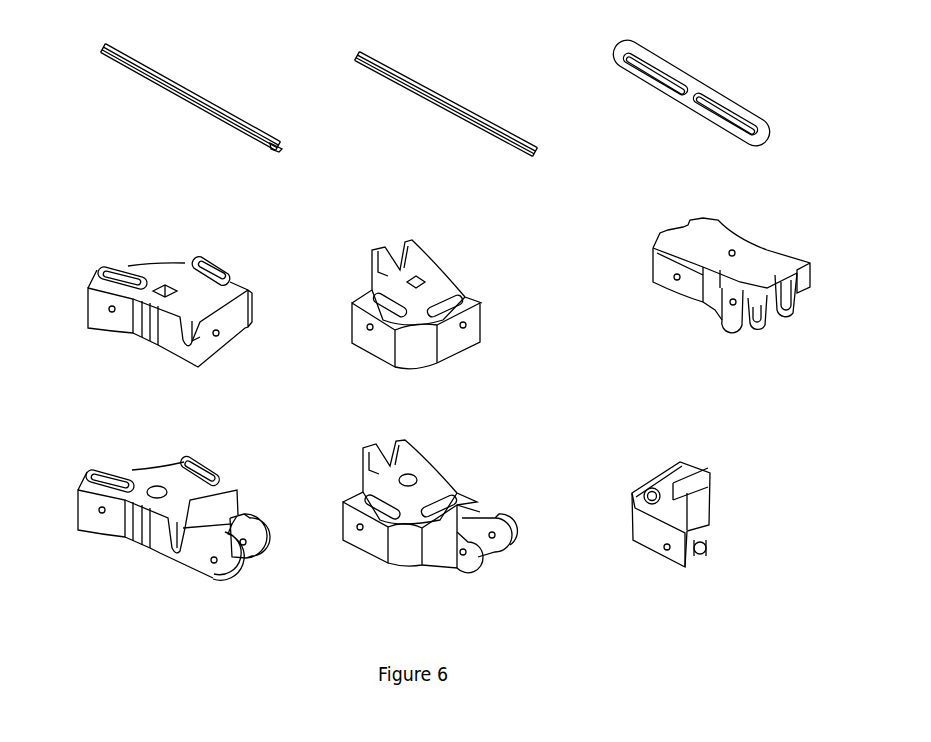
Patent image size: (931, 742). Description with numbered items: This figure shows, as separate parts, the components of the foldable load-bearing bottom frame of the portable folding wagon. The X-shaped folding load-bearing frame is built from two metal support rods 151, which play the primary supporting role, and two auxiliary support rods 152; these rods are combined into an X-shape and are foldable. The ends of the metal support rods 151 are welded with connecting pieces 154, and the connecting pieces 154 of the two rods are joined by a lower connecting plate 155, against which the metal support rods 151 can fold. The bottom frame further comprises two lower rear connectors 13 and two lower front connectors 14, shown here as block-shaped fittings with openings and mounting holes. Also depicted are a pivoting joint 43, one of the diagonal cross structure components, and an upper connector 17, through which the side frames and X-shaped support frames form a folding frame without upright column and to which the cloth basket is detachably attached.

The metal support rod 151 is at (168, 95).
The auxiliary support rod 152 is at (448, 113).
The connecting piece 154 is at (245, 148).
The lower connecting plate 155 is at (683, 103).
The lower rear connector 13 is at (377, 345).
The lower front connector 14 is at (390, 565).
The pivoting joint 43 is at (720, 277).
The upper connector 17 is at (647, 550).